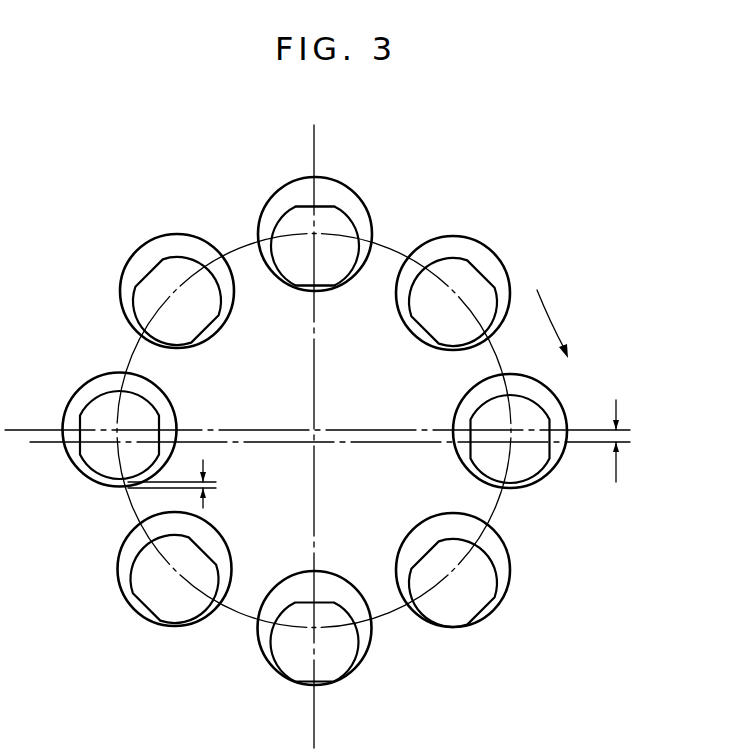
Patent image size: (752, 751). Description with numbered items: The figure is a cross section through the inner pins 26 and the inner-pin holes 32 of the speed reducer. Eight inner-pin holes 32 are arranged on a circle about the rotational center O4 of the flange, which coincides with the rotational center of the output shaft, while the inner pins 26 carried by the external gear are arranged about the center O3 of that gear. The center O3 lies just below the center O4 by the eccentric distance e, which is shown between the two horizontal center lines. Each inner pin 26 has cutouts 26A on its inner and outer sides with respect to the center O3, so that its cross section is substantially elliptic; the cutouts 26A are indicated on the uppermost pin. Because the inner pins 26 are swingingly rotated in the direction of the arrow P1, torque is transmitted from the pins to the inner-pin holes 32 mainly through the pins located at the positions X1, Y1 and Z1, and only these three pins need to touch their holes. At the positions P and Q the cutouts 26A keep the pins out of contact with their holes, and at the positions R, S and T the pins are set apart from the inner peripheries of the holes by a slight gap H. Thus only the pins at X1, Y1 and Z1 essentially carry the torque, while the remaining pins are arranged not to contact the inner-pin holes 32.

The inner pin 26 is at (277, 227).
The cutout 26A is at (343, 206).
The inner-pin hole 32 is at (368, 207).
The position Q is at (319, 241).
The position X1 is at (472, 283).
The position Y1 is at (528, 467).
The position Z1 is at (465, 605).
The position P is at (338, 662).
The position R is at (177, 613).
The position S is at (103, 455).
The position T is at (148, 298).
The arrow P1 is at (564, 324).
The center of the external gear O3 is at (314, 442).
The rotational center of the flange O4 is at (314, 430).
The eccentric distance e is at (631, 441).
The gap H is at (182, 484).